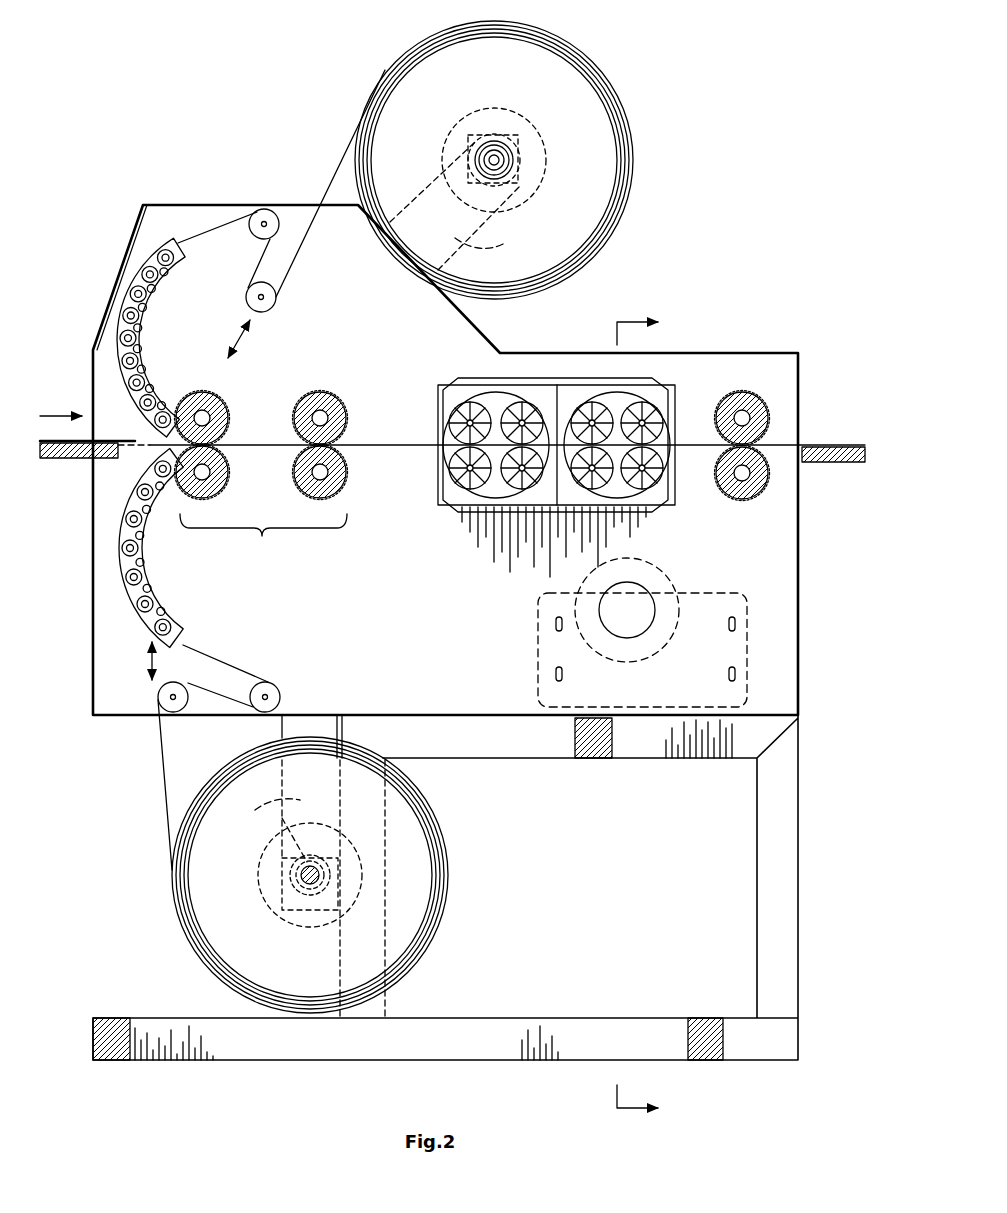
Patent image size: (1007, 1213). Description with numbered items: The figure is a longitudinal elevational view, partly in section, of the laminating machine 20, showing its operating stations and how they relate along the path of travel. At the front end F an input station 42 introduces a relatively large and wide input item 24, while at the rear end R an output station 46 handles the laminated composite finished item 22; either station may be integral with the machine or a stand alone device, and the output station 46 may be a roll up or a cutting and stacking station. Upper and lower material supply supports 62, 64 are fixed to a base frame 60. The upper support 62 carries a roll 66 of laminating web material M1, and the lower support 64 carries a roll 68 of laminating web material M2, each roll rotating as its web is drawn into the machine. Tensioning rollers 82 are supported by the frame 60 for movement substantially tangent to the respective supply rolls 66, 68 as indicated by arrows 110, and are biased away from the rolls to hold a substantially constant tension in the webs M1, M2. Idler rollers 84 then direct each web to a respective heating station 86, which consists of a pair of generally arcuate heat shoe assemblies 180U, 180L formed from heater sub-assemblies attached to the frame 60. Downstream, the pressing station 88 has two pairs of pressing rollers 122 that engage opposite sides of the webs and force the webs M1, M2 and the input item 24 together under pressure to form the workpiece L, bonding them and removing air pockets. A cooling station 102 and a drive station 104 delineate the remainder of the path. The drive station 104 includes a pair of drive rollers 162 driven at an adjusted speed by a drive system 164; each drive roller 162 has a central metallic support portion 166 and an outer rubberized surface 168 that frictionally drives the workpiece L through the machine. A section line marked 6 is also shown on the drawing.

The laminating machine 20 is at (667, 130).
The laminated composite finished item 22 is at (848, 445).
The input item 24 is at (122, 438).
The input station 42 is at (75, 460).
The output station 46 is at (840, 464).
The base frame 60 is at (782, 915).
The upper material supply support 62 is at (500, 248).
The lower material supply support 64 is at (262, 797).
The roll of laminating web material M1 66 is at (580, 58).
The roll of laminating web material M2 68 is at (410, 965).
The tensioning roller 82 is at (266, 310).
The idler roller 84 is at (264, 210).
The heating station 86 is at (165, 230).
The pressing station 88 is at (263, 537).
The cooling station 102 is at (446, 528).
The drive station 104 is at (731, 501).
The arrows 110 is at (228, 352).
The pressing rollers 122 is at (228, 414).
The drive rollers 162 is at (770, 393).
The drive system 164 is at (655, 634).
The central metallic support portion 166 is at (713, 410).
The outer rubberized surface 168 is at (742, 391).
The upper heat shoe assembly 180U is at (126, 299).
The lower heat shoe assembly 180L is at (124, 590).
The laminating web material M1 is at (337, 172).
The laminating web material M2 is at (162, 818).
The front end F is at (130, 238).
The rear end R is at (802, 358).
The workpiece L is at (420, 478).
The section line 6- 6 is at (650, 716).